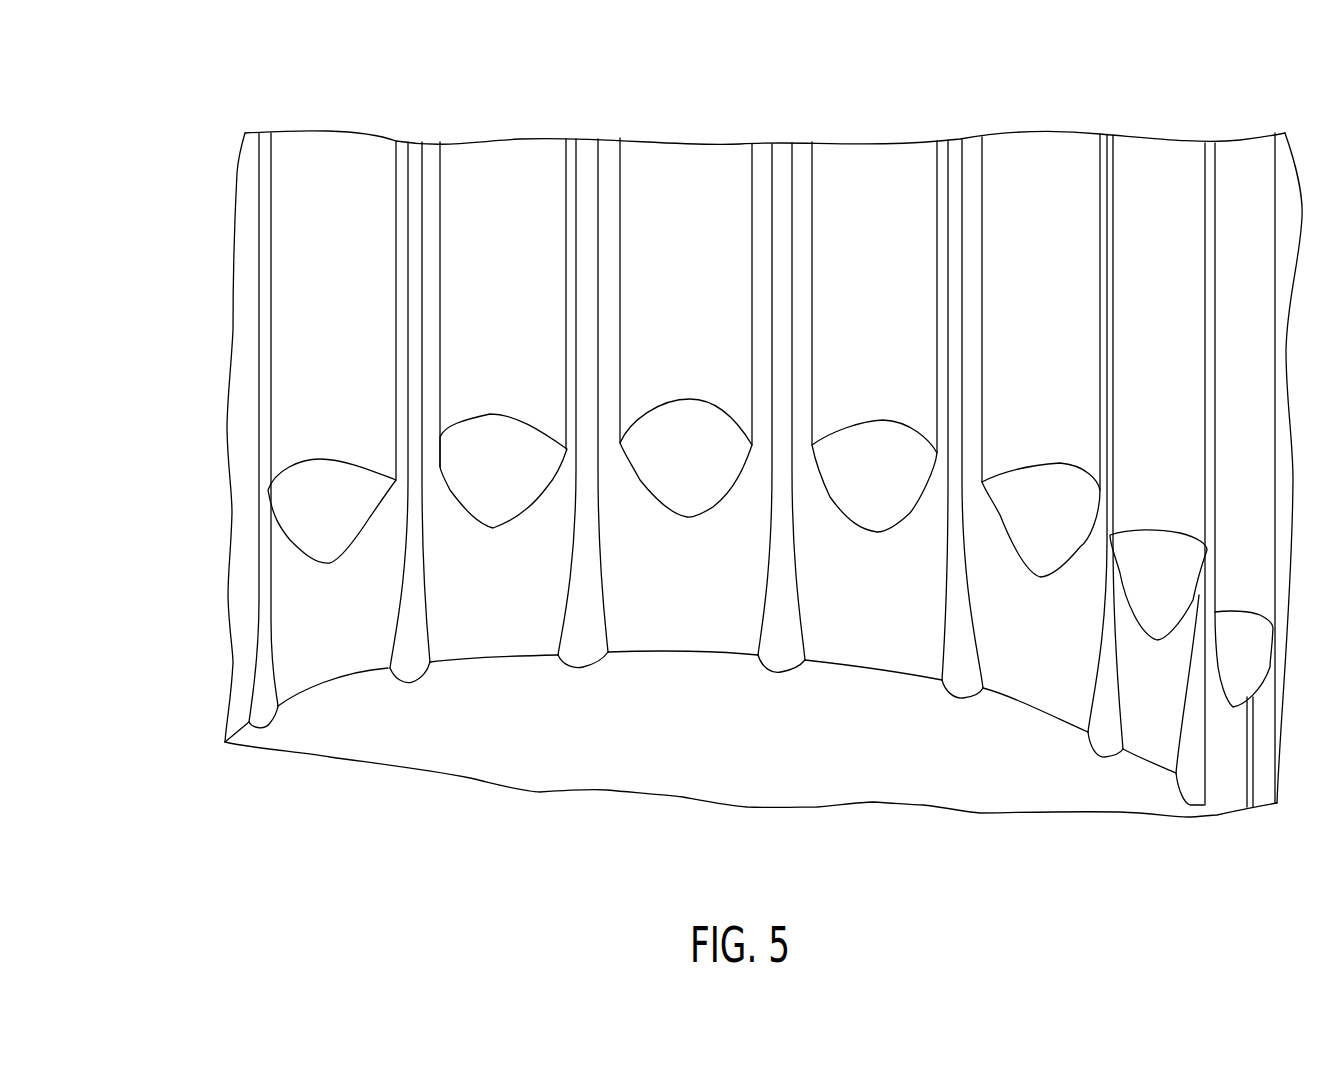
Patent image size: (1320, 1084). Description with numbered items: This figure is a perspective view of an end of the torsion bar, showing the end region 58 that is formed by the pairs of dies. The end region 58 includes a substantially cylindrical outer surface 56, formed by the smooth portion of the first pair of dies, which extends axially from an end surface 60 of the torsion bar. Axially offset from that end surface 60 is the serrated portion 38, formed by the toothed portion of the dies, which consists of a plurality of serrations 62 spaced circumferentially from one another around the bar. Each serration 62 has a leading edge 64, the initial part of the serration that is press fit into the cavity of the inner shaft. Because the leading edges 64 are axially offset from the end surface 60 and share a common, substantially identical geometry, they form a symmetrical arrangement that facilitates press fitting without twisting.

The serrated portion 38 is at (233, 343).
The cylindrical outer surface 56 is at (705, 623).
The end region 58 is at (1058, 113).
The end surface 60 is at (860, 745).
The serrations 62 is at (493, 173).
The leading edge 64 is at (312, 513).